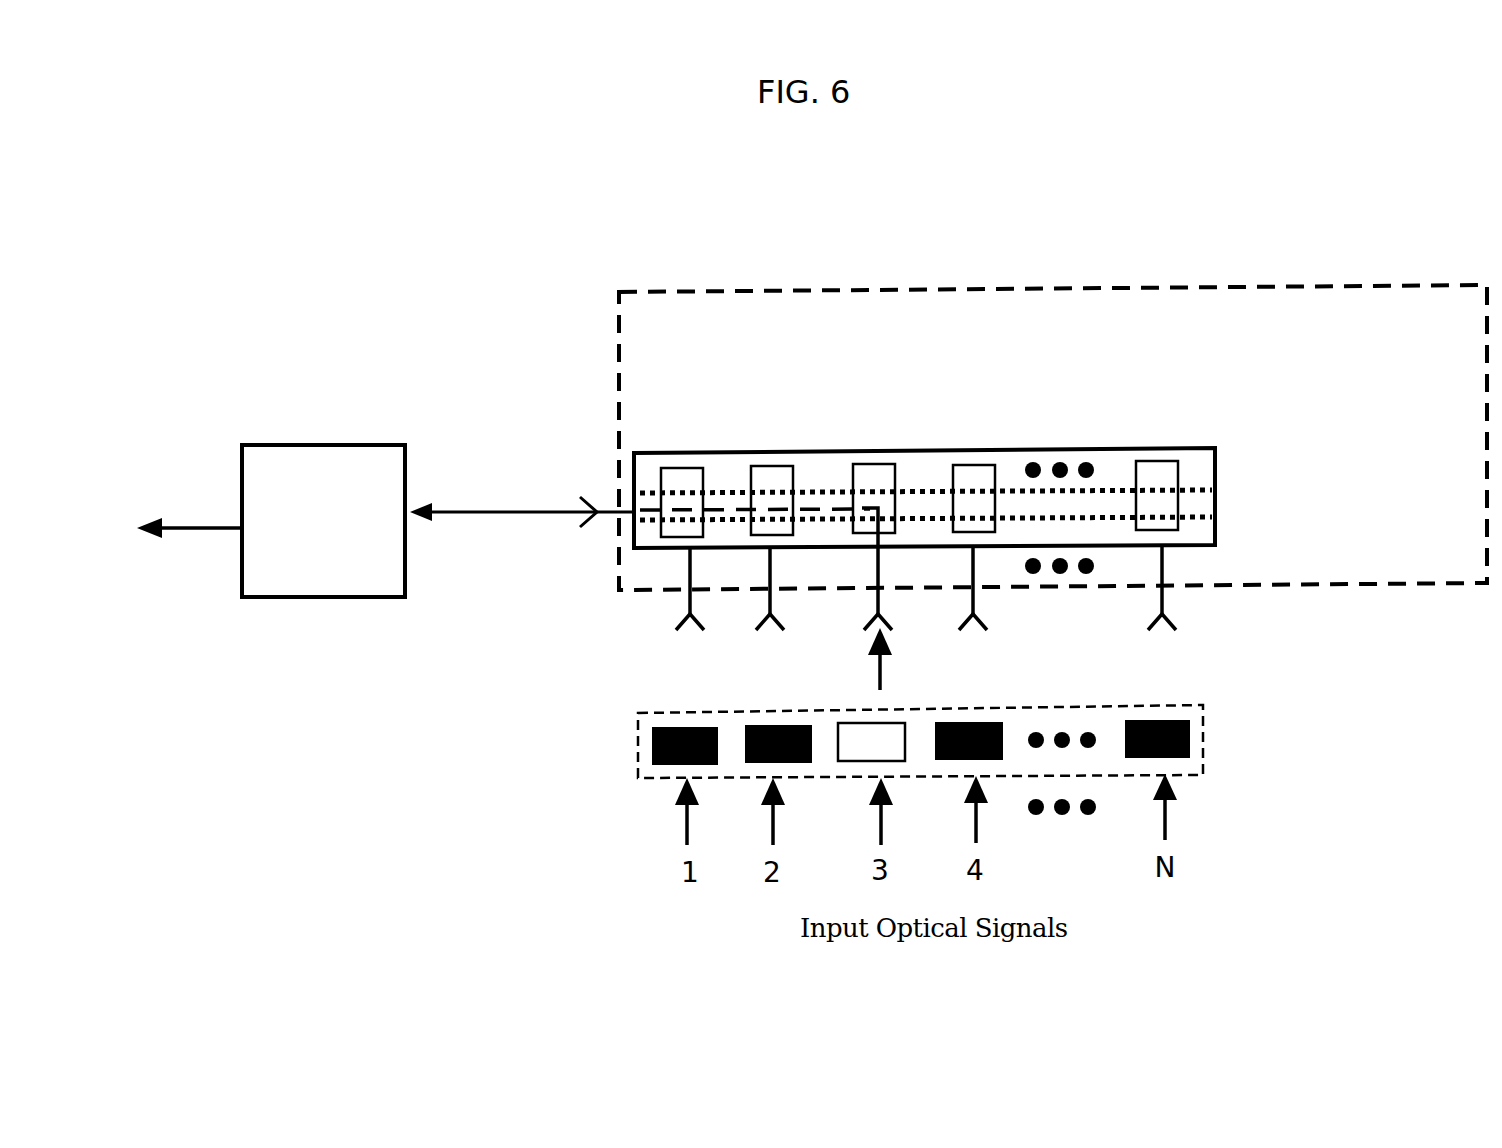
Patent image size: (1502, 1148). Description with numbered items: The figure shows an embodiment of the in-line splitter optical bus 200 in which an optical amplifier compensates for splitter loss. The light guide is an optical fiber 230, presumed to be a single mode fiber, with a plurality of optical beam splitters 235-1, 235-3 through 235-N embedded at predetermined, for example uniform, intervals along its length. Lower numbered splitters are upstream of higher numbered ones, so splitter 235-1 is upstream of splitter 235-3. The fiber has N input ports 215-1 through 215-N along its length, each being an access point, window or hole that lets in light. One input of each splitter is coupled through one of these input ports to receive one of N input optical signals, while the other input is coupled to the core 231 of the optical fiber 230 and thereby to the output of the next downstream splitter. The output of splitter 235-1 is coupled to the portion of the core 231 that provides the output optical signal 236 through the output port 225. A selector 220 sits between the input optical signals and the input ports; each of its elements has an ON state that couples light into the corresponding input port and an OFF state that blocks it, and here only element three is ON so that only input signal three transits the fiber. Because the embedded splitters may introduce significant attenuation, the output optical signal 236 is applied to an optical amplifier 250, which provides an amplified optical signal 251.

The optical bus 200 is at (385, 153).
The input port 215-1 is at (662, 600).
The input port 215-N is at (1178, 598).
The selector 220 is at (1215, 772).
The output port 225 is at (612, 498).
The optical fiber 230 is at (1322, 392).
The core 231 is at (1283, 514).
The optical beam splitter 235-1 is at (710, 475).
The optical beam splitter 235-3 is at (903, 475).
The optical beam splitter 235-N is at (1130, 465).
The output optical signal 236 is at (478, 488).
The optical amplifier 250 is at (323, 521).
The amplified optical signal 251 is at (189, 507).